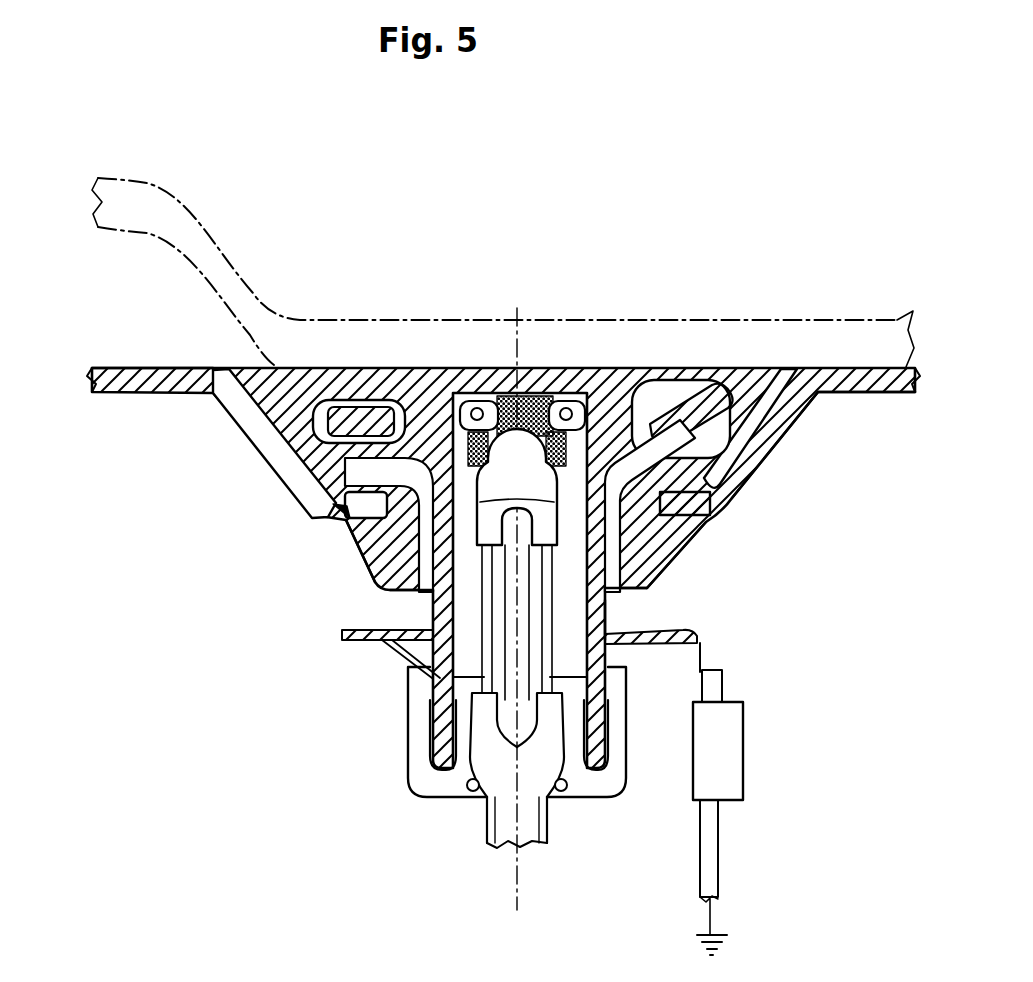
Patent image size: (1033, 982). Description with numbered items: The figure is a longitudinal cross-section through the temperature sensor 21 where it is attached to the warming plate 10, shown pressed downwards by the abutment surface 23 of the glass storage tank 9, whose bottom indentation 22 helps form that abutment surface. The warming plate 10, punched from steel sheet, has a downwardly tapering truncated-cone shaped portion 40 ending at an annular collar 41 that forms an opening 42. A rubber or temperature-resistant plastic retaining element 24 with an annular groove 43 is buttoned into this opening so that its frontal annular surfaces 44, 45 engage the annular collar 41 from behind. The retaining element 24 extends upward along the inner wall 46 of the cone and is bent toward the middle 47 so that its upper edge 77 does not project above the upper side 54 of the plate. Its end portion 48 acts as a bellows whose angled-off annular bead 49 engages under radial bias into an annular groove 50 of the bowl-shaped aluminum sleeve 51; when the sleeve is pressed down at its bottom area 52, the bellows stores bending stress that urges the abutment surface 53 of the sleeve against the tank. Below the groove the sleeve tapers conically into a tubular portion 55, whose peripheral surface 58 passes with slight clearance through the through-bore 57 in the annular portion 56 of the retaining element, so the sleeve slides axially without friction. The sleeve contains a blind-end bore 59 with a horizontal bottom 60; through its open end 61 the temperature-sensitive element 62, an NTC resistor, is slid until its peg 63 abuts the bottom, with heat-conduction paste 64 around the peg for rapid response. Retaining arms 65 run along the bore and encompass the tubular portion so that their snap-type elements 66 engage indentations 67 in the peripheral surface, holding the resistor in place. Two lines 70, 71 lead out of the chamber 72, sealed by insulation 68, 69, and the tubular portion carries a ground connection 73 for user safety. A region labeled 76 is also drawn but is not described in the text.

The storage tank 9 is at (125, 178).
The warming plate 10 is at (148, 392).
The temperature sensor 21 is at (406, 765).
The indentation 22 is at (897, 393).
The abutment surface 23 is at (472, 343).
The retaining element 24 is at (360, 568).
The truncated-cone shaped portion 40 is at (773, 443).
The annular collar 41 is at (705, 517).
The opening 42 is at (345, 517).
The annular groove 43 is at (330, 505).
The frontal annular surface 44 is at (712, 500).
The frontal annular surface 45 is at (685, 533).
The inner wall 46 is at (800, 430).
The middle 47 is at (518, 314).
The end portion (bellows) 48 is at (725, 384).
The annular bead 49 is at (637, 398).
The annular groove 50 is at (400, 400).
The sleeve 51 is at (418, 624).
The bottom area 52 is at (472, 385).
The abutment surface 53 is at (408, 393).
The upper side 54 is at (126, 368).
The tubular portion 55 is at (608, 592).
The annular portion 56 is at (365, 538).
The through-bore 57 is at (433, 591).
The peripheral surface 58 is at (620, 612).
The blind-end bore 59 is at (425, 657).
The bottom 60 is at (568, 390).
The open end 61 is at (598, 760).
The temperature-sensitive element (NTC resistor) 62 is at (545, 405).
The peg 63 is at (518, 395).
The heat-conduction paste 64 is at (445, 415).
The retaining arms 65 is at (517, 487).
The snap-type elements 66 is at (614, 703).
The indentations 67 is at (445, 708).
The insulation 68 is at (490, 845).
The insulation 69 is at (544, 845).
The line 70 is at (470, 678).
The line 71 is at (575, 677).
The chamber 72 is at (620, 646).
The ground connection 73 is at (702, 640).
The recess 76 is at (312, 440).
The upper edge 77 is at (750, 380).